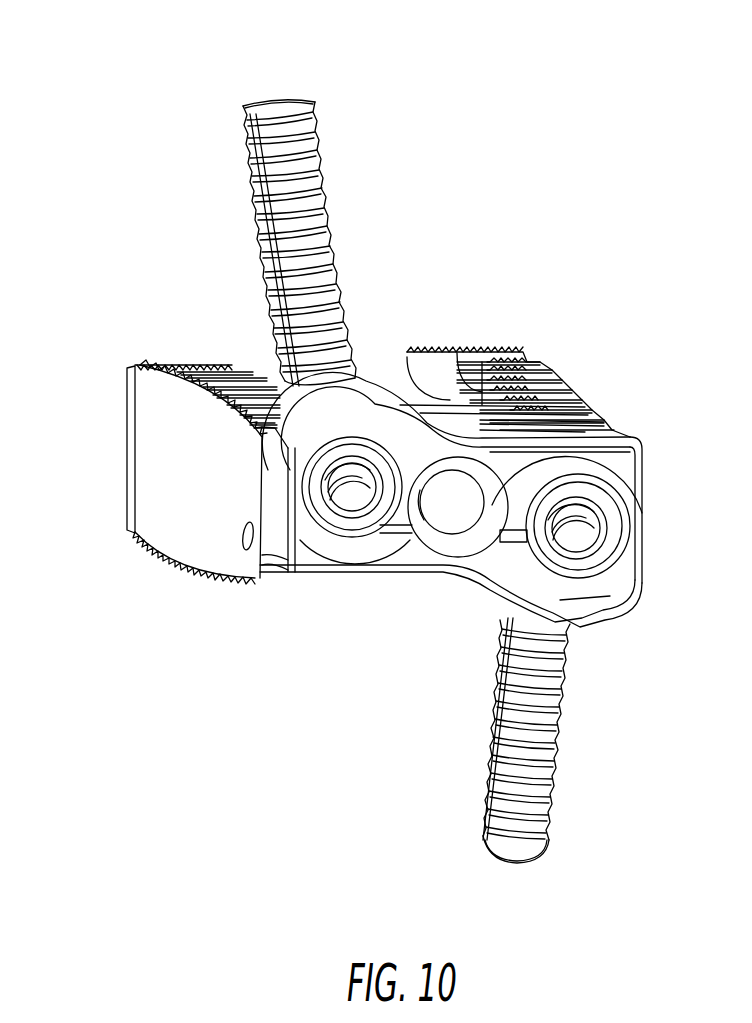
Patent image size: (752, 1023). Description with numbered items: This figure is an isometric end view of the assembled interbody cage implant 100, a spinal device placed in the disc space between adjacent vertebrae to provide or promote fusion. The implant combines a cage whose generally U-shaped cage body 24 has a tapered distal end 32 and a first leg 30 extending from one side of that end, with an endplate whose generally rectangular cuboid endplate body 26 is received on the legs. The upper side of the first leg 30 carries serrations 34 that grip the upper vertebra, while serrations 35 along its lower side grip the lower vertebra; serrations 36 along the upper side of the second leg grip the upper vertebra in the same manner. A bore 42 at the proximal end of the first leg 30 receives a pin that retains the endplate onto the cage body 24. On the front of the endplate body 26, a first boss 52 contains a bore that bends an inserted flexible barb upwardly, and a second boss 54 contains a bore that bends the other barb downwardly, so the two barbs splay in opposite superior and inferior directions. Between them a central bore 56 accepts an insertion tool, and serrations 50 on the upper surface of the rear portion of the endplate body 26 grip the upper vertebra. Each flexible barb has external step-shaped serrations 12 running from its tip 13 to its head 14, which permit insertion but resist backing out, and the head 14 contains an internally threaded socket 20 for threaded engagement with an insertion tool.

The interbody cage implant 100 is at (609, 180).
The serrations 12 is at (312, 222).
The tip 13 is at (282, 102).
The head 14 is at (330, 532).
The internally threaded socket 20 is at (352, 508).
The cage body 24 is at (123, 541).
The endplate body 26 is at (641, 438).
The first leg 30 is at (170, 435).
The distal end 32 is at (378, 376).
The serrations 34 is at (186, 364).
The serrations 35 is at (175, 566).
The serrations 36 is at (527, 354).
The bore 42 is at (213, 578).
The serrations 50 is at (558, 424).
The first boss 52 is at (368, 416).
The second boss 54 is at (595, 594).
The central bore 56 is at (455, 512).